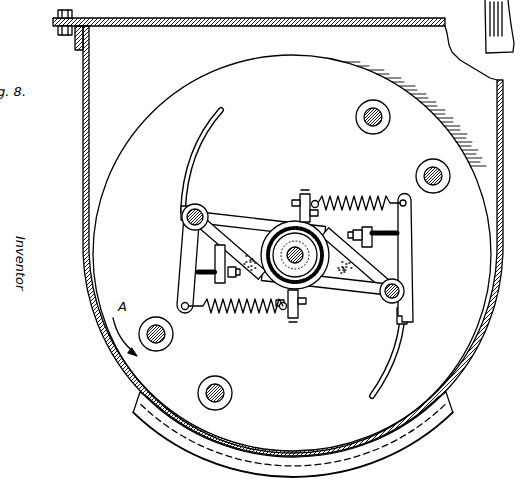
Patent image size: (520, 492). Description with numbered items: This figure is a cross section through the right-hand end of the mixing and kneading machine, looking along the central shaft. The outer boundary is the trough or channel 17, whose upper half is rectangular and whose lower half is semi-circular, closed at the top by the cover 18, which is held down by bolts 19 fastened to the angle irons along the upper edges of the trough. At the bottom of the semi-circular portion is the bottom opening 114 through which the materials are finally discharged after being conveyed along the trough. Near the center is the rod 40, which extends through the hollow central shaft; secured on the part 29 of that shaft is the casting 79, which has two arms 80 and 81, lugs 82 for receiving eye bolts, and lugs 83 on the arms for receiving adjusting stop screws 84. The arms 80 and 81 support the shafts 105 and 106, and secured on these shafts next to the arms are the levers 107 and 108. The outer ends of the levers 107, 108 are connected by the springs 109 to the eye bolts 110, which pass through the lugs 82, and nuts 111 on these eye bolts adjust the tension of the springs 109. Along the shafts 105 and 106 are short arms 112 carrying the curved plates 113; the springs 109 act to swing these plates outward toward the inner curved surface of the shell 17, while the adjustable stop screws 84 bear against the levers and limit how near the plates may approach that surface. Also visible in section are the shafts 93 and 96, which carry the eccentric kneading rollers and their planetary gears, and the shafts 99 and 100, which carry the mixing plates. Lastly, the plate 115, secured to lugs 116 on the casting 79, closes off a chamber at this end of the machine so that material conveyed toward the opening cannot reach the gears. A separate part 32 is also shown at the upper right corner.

The trough or channel 17 is at (83, 229).
The cover 18 is at (218, 17).
The bolts 19 is at (72, 17).
The part of shaft 29 is at (268, 279).
The bracket 32 is at (483, 26).
The rod 40 is at (298, 254).
The casting 79 is at (293, 227).
The arm 80 is at (358, 261).
The arm 81 is at (228, 246).
The lugs 82 is at (304, 196).
The lugs 83 is at (216, 257).
The adjusting stop screws 84 is at (200, 272).
The shaft 93 is at (364, 110).
The shaft 96 is at (224, 399).
The shaft 99 is at (434, 166).
The shaft 100 is at (158, 346).
The shaft 105 is at (405, 293).
The shaft 106 is at (182, 213).
The lever 107 is at (408, 237).
The lever 108 is at (182, 240).
The springs 109 is at (372, 200).
The eye bolts 110 is at (313, 200).
The nuts 111 is at (302, 193).
The short arms 112 is at (193, 204).
The curved plates 113 is at (198, 136).
The bottom opening 114 is at (381, 437).
The plate 115 is at (374, 80).
The lugs 116 is at (252, 246).